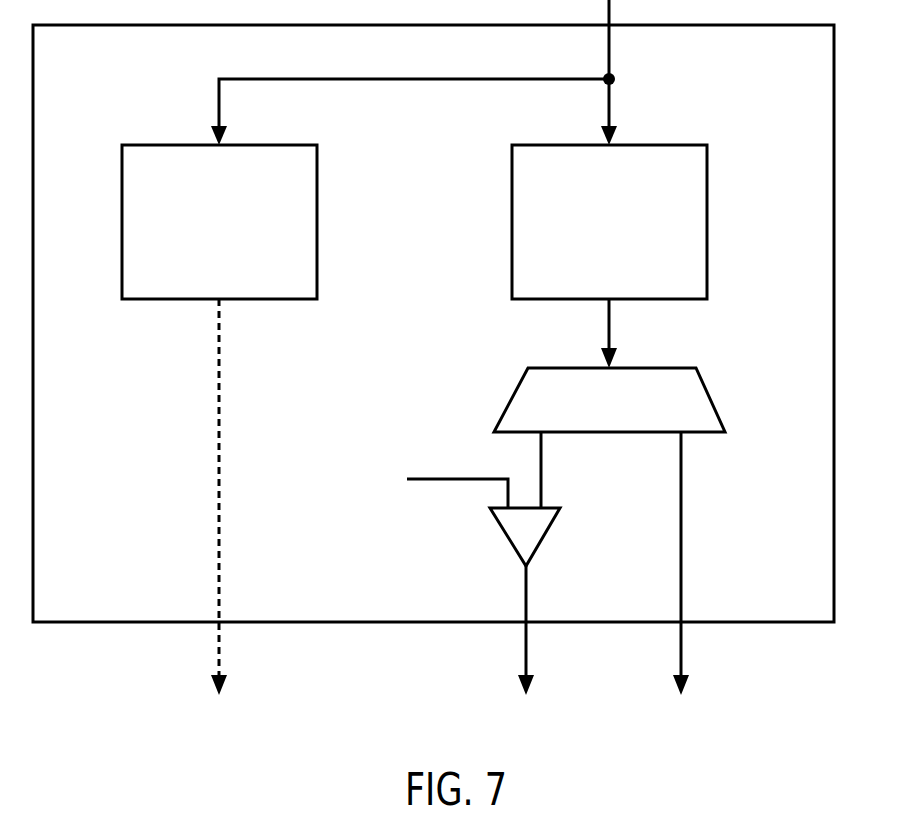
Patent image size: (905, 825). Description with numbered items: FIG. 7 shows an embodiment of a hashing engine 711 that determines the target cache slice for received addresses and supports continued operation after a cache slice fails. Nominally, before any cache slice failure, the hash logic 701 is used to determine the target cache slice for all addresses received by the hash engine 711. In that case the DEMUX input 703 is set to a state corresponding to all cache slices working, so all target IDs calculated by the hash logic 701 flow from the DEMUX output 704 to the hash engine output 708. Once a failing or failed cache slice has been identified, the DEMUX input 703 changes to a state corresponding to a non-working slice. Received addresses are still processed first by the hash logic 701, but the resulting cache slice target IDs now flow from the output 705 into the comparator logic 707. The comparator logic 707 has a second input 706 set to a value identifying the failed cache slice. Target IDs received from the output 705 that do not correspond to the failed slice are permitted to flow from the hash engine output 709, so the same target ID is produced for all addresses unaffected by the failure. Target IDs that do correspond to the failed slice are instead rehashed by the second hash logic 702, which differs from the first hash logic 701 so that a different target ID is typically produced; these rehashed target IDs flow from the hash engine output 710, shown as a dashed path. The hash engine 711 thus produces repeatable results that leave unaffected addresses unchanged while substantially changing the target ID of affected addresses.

The hash logic 701 is at (707, 199).
The second hash logic 702 is at (317, 199).
The DEMUX input 703 is at (728, 398).
The DEMUX output 704 is at (681, 520).
The output 705 is at (541, 468).
The second input 706 is at (453, 477).
The comparator logic 707 is at (509, 538).
The hash engine output 708 is at (683, 655).
The hash engine output 709 is at (524, 653).
The hash engine output 710 is at (221, 650).
The hash engine 711 is at (90, 71).